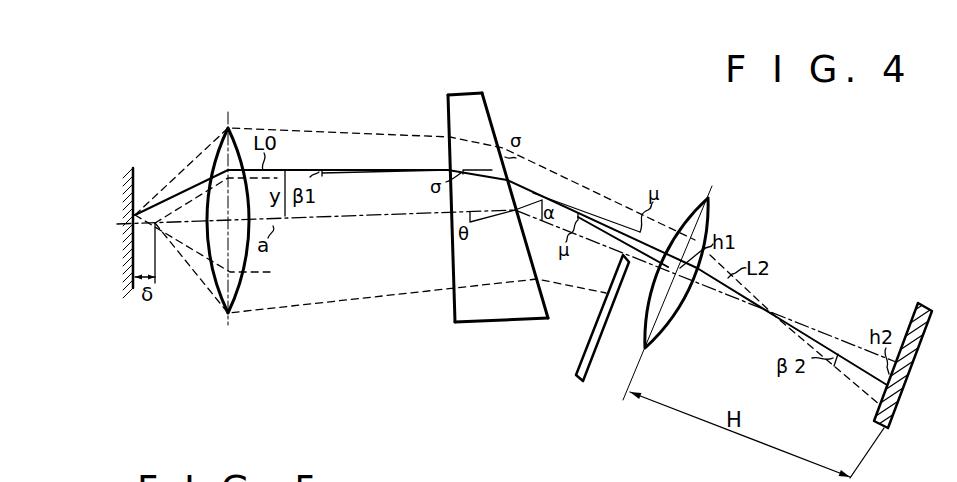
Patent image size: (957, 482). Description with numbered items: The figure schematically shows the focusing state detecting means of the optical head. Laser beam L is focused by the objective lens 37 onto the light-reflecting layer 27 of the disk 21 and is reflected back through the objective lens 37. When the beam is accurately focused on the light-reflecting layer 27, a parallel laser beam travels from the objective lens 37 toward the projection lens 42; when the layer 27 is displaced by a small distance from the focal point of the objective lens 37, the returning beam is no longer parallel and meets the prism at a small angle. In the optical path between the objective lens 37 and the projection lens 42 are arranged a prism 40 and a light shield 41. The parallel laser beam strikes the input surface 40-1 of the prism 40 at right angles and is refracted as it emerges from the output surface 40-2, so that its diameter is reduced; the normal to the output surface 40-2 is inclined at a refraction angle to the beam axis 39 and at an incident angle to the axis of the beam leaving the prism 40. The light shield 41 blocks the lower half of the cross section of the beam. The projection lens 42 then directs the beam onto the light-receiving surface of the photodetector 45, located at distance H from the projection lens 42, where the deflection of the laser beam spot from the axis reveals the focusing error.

The disk 21 is at (124, 180).
The light-reflecting layer 27 is at (134, 168).
The objective lens 37 is at (225, 138).
The axis of beam L0 39 is at (370, 219).
The prism 40 is at (463, 211).
The input surface 40-1 is at (448, 95).
The output surface 40-2 is at (487, 102).
The light shield 41 is at (590, 347).
The projection lens 42 is at (710, 199).
The photodetector 45 is at (918, 303).